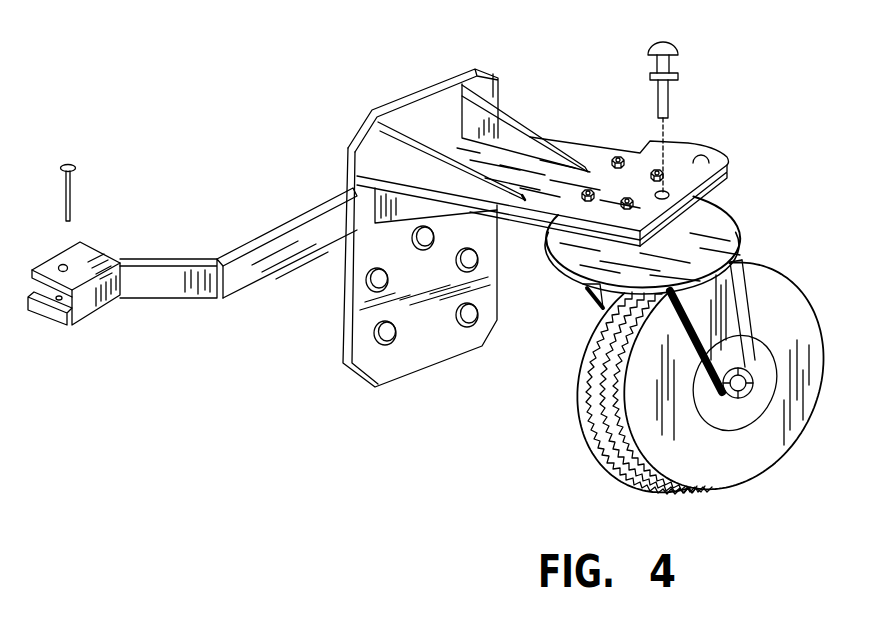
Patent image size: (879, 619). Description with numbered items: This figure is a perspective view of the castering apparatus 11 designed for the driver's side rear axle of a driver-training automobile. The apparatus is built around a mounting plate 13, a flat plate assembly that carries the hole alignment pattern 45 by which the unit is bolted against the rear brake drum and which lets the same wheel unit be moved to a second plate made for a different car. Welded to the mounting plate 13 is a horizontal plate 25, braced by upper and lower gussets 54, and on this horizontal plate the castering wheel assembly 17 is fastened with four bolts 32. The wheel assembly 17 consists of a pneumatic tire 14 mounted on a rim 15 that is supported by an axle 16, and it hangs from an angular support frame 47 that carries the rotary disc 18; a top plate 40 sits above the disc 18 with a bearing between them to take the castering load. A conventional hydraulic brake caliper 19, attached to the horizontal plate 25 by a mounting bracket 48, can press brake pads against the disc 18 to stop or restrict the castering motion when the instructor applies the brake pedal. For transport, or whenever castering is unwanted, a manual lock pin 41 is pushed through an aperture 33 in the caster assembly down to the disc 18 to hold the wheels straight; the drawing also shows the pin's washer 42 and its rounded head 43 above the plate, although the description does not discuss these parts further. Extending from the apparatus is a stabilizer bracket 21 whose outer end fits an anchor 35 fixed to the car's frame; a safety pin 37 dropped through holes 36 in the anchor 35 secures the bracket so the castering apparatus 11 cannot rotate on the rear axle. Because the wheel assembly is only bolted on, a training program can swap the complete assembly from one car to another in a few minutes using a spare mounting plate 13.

The castering apparatus 11 is at (353, 128).
The mounting plate 13 is at (442, 348).
The pneumatic tire 14 is at (803, 322).
The rim 15 is at (735, 417).
The axle 16 is at (747, 363).
The castering wheel assembly 17 is at (733, 310).
The disc 18 is at (722, 217).
The brake caliper 19 is at (700, 145).
The stabilizer bracket 21 is at (155, 258).
The horizontal plate 25 is at (538, 220).
The bolts 32 is at (610, 155).
The aperture 33 is at (713, 167).
The anchor 35 is at (102, 253).
The holes 36 is at (67, 271).
The safety pin 37 is at (78, 198).
The top plate 40 is at (660, 237).
The manual lock pin 41 is at (672, 102).
The washer 42 is at (648, 78).
The bolt head 43 is at (663, 40).
The hole alignment pattern 45 is at (366, 289).
The angular support frame 47 is at (747, 263).
The mounting bracket 48 is at (655, 165).
The gussets 54 is at (487, 75).